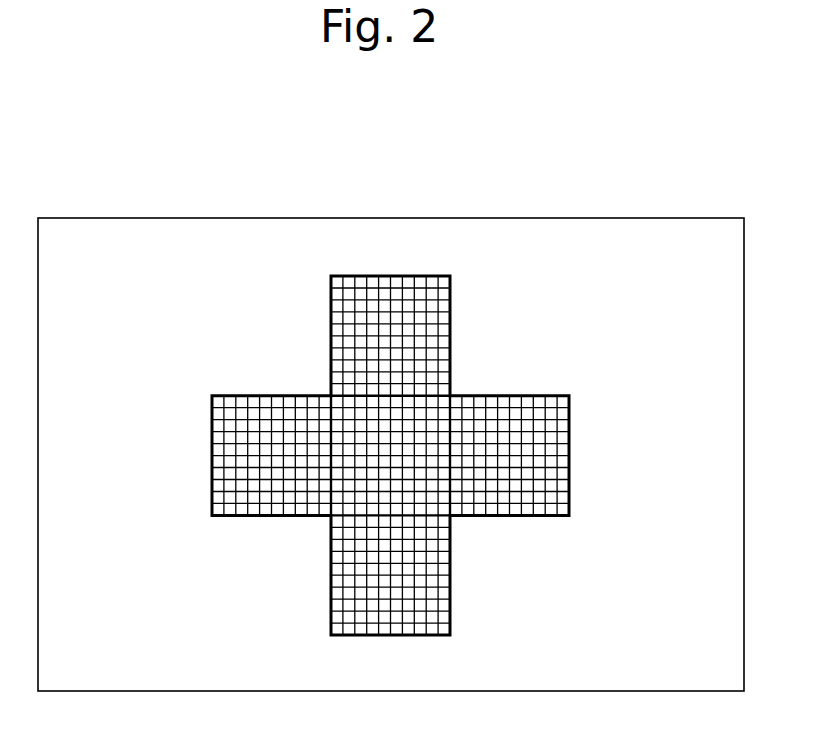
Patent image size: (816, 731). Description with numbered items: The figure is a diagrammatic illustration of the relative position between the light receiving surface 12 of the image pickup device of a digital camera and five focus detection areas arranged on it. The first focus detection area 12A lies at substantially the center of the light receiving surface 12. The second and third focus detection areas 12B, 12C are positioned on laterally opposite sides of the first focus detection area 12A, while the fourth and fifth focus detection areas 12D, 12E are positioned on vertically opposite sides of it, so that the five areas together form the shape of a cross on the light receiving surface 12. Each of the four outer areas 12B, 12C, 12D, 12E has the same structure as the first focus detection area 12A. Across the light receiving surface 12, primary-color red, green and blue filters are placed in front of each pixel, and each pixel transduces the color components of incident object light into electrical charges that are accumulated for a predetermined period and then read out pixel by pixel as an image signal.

The light receiving surface 12 is at (443, 218).
The first focus detection area 12A is at (390, 450).
The second focus detection area 12B is at (272, 440).
The third focus detection area 12C is at (507, 450).
The fourth focus detection area 12D is at (392, 343).
The fifth focus detection area 12E is at (392, 570).